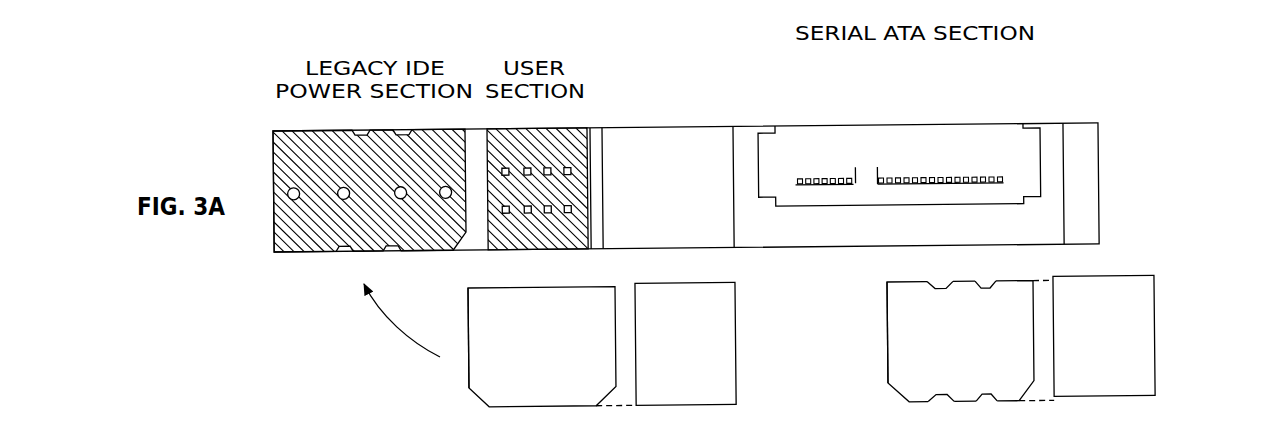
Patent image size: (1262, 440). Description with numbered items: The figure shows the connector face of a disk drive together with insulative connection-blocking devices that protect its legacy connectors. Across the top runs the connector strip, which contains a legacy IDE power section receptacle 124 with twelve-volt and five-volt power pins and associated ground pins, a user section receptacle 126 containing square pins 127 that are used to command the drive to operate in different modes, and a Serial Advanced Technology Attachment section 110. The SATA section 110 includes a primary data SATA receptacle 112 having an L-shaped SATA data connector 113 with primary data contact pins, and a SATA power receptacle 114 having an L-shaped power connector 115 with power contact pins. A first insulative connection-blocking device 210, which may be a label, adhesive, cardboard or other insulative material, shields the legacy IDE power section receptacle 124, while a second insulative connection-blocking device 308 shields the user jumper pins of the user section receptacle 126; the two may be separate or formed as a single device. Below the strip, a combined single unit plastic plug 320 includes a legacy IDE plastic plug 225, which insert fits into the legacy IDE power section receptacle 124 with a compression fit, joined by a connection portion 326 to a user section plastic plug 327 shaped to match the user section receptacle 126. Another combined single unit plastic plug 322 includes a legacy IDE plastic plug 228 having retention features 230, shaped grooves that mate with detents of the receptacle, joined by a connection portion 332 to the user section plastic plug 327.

The Serial Advanced Technology Attachment (SATA) section 110 is at (1098, 118).
The primary data SATA receptacle 112 is at (841, 138).
The L-shaped SATA data connector 113 is at (855, 183).
The SATA power receptacle 114 is at (976, 138).
The L-shaped power connector 115 is at (877, 174).
The legacy IDE power section receptacle 124 is at (348, 236).
The user section receptacle 126 is at (577, 200).
The square pins 127 is at (503, 168).
The insulative connection-blocking device 210 is at (393, 136).
The second insulative connection-blocking device 308 is at (527, 136).
The legacy IDE plastic plug 225 is at (478, 318).
The combined single unit plastic plug 320 is at (466, 356).
The connection portion 326 is at (622, 300).
The user section plastic plug 327 is at (723, 315).
The legacy IDE plastic plug with retention features 228 is at (898, 308).
The retention features 230 is at (938, 287).
The combined single unit plastic plug 322 is at (885, 351).
The connection portion 332 is at (1042, 392).